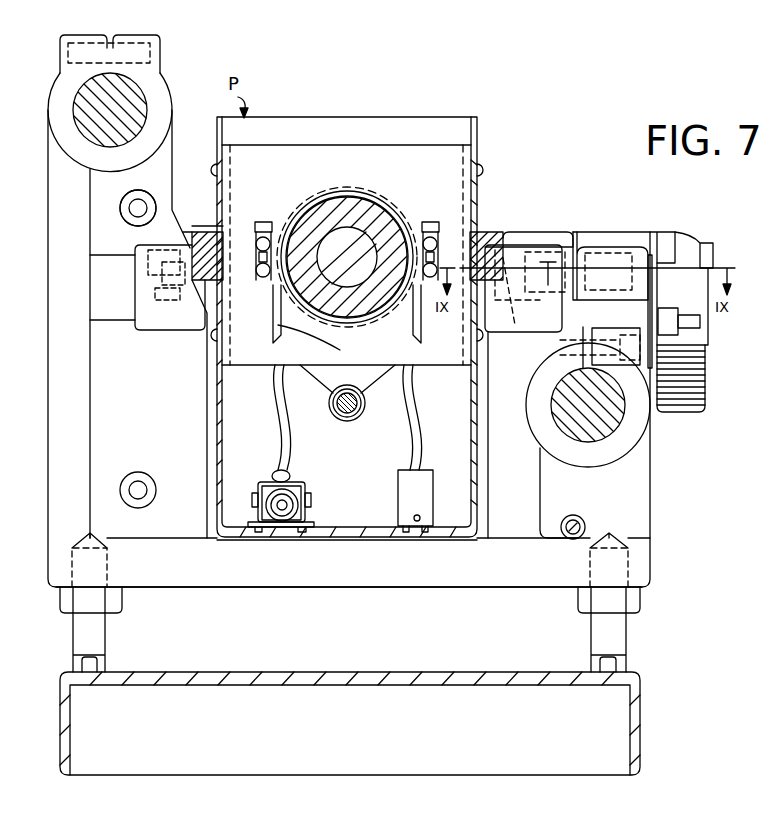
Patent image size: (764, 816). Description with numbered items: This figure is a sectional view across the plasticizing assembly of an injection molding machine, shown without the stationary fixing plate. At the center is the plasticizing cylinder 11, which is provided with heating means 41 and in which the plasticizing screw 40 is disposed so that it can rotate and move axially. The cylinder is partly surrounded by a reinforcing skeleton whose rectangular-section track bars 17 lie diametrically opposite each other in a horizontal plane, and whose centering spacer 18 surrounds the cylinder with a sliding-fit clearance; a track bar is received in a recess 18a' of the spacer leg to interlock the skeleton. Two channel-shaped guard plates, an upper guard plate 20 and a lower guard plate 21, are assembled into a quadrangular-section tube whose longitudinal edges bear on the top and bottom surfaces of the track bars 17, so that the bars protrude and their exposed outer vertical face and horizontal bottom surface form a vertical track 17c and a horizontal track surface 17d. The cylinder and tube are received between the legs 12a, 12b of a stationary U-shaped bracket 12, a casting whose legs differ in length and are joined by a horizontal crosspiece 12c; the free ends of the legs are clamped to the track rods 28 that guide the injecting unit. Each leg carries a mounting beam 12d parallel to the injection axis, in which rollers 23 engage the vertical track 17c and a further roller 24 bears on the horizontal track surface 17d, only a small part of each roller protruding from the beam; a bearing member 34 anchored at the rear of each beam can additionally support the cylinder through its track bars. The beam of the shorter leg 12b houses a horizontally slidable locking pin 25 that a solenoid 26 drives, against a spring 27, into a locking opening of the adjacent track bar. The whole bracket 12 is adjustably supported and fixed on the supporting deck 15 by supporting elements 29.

The plasticizing cylinder 11 is at (342, 210).
The U-shaped bracket 12 is at (431, 587).
The leg of the U-shaped bracket 12a is at (118, 422).
The shorter leg of the U-shaped bracket 12b is at (612, 508).
The horizontal crosspiece 12c is at (238, 580).
The mounting beam 12d is at (140, 290).
The supporting deck 15 is at (388, 743).
The track bar 17 is at (190, 248).
The vertical track 17c is at (186, 236).
The horizontal track surface 17d is at (228, 318).
The centering spacer 18 is at (308, 368).
The recess 18a' is at (346, 225).
The upper guard plate 20 is at (375, 117).
The lower guard plate 21 is at (350, 532).
The roller 23 is at (157, 240).
The roller 24 is at (195, 316).
The locking pin 25 is at (540, 232).
The solenoid 26 is at (645, 238).
The spring 27 is at (562, 247).
The track rod 28 is at (72, 100).
The supporting element 29 is at (92, 642).
The bearing member 34 is at (525, 326).
The plasticizing screw 40 is at (336, 250).
The heating means 41 is at (412, 318).